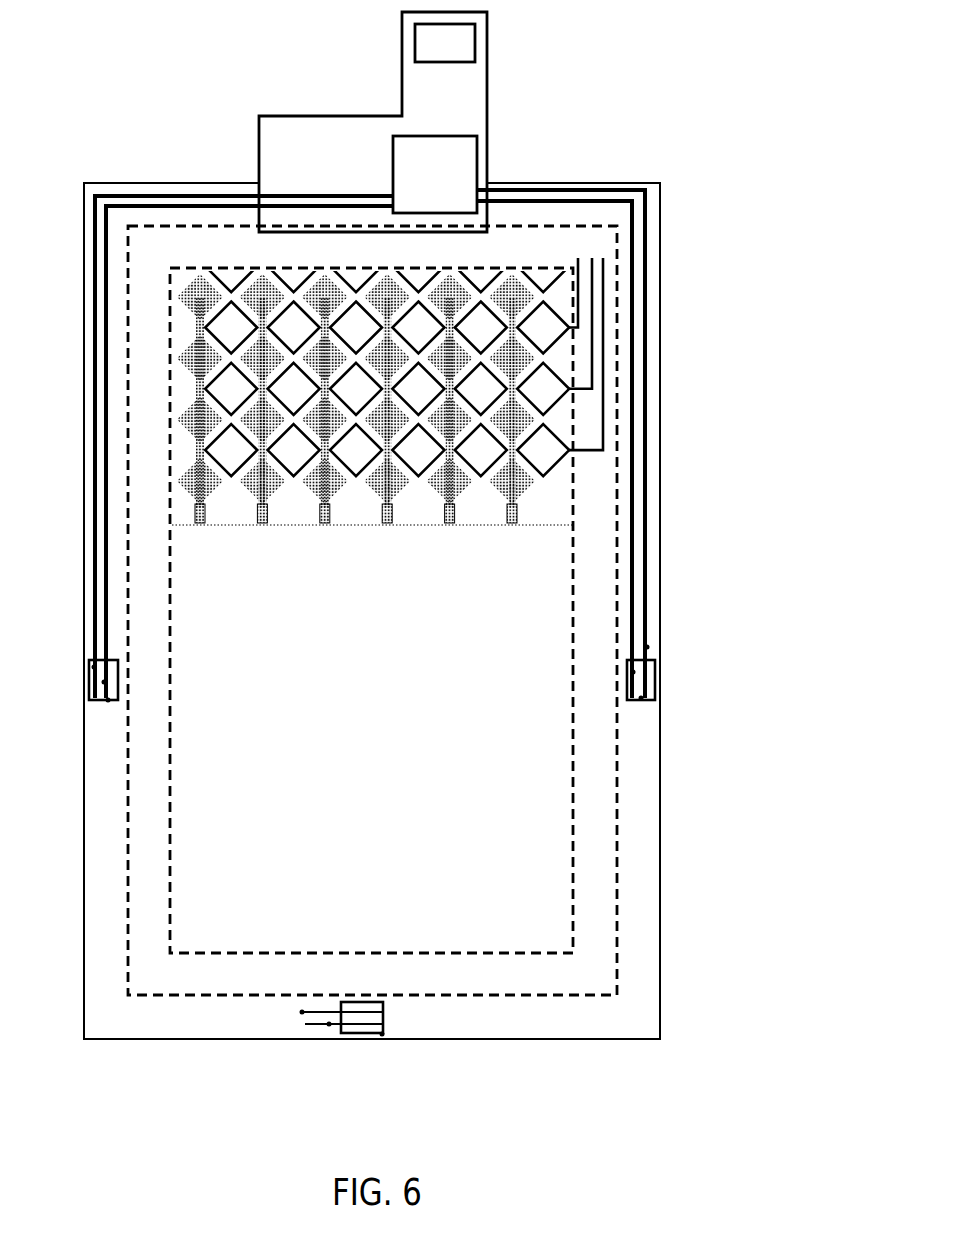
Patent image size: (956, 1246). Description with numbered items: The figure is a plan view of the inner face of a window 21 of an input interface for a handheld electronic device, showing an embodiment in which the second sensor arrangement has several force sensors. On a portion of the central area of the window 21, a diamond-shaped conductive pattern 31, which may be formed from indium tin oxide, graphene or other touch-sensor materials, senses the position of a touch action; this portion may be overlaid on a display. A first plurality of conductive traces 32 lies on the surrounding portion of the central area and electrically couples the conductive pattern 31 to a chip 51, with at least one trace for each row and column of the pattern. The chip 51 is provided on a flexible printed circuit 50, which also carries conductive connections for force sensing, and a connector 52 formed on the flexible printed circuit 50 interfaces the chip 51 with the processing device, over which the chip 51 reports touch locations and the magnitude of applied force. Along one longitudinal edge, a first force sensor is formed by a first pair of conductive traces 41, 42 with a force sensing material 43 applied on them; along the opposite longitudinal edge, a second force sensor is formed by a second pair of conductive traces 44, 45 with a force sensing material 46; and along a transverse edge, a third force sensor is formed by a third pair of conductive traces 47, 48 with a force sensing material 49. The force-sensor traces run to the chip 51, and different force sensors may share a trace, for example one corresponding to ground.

The window 21 is at (82, 181).
The conductive pattern 31 is at (378, 534).
The first plurality of conductive traces 32 is at (584, 477).
The conductive trace 41 is at (94, 667).
The conductive trace 42 is at (104, 682).
The force sensing material 43 is at (108, 700).
The conductive trace 44 is at (647, 647).
The conductive trace 45 is at (633, 672).
The force sensing material 46 is at (641, 698).
The conductive trace 47 is at (302, 1013).
The conductive trace 48 is at (329, 1024).
The force sensing material 49 is at (382, 1034).
The flexible printed circuit 50 is at (401, 77).
The chip 51 is at (477, 162).
The connector 52 is at (475, 52).